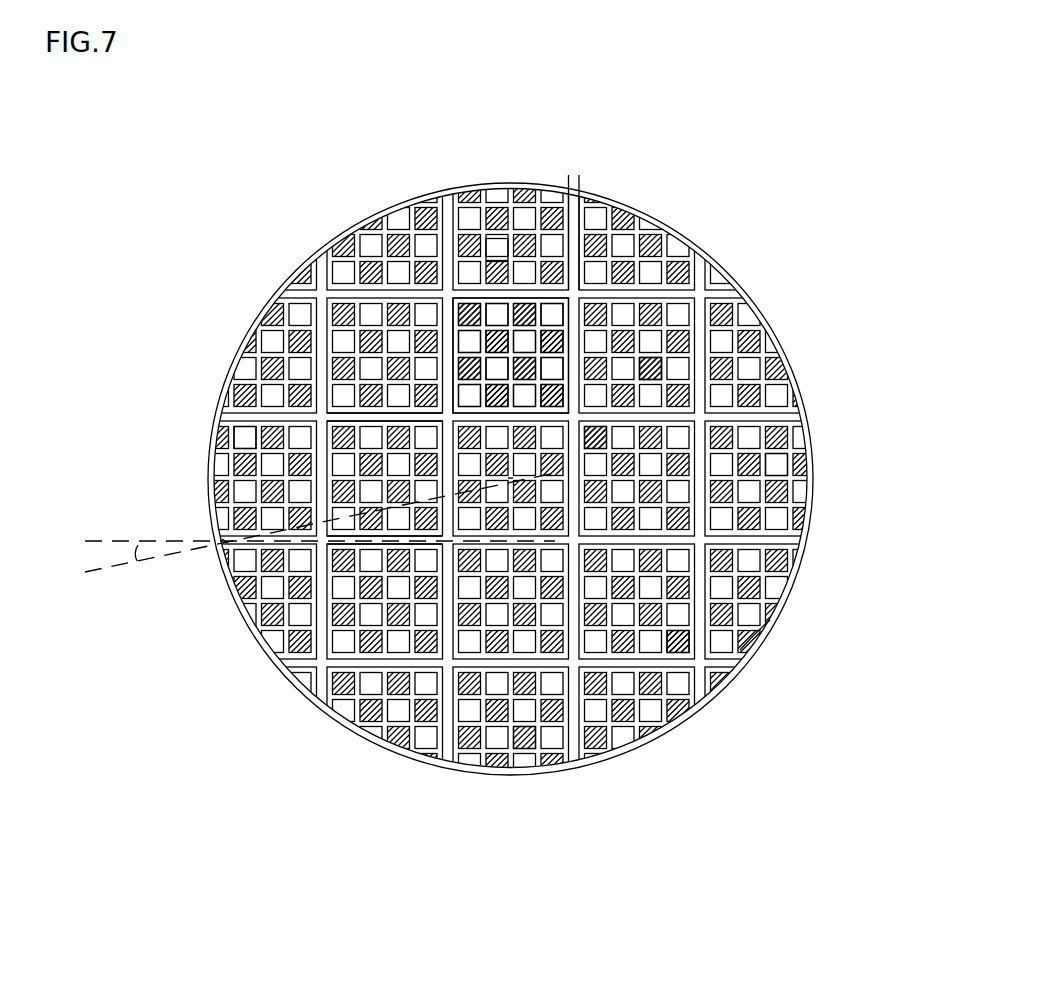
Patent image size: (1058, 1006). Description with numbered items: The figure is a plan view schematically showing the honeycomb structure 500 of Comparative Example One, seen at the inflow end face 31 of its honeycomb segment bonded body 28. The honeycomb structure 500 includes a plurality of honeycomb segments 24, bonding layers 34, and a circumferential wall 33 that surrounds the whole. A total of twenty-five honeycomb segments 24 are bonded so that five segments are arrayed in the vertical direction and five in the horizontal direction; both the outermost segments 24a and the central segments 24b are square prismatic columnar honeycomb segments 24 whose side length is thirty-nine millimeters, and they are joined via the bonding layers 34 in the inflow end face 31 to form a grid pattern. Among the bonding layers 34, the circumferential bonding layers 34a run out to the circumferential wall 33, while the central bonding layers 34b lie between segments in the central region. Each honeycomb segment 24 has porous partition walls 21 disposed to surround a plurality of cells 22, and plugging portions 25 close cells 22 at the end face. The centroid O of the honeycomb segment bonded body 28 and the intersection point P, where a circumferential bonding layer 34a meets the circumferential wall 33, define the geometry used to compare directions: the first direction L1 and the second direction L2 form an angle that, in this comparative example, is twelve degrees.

The honeycomb structure 500 is at (860, 129).
The inflow end face 31 is at (284, 237).
The honeycomb segment bonded body 28 is at (752, 303).
The circumferential wall 33 is at (757, 638).
The honeycomb segment 24 is at (493, 230).
The outermost segment 24a is at (237, 452).
The central segment 24b is at (578, 441).
The bonding layer 34 is at (480, 418).
The circumferential bonding layer 34a is at (573, 235).
The central bonding layer 34b is at (380, 545).
The plugging portion 25 is at (556, 333).
The porous partition wall 21 is at (637, 351).
The cell 22 is at (657, 366).
The first direction L1 is at (302, 542).
The second direction L2 is at (305, 532).
The intersection point P is at (218, 585).
The centroid O is at (560, 482).